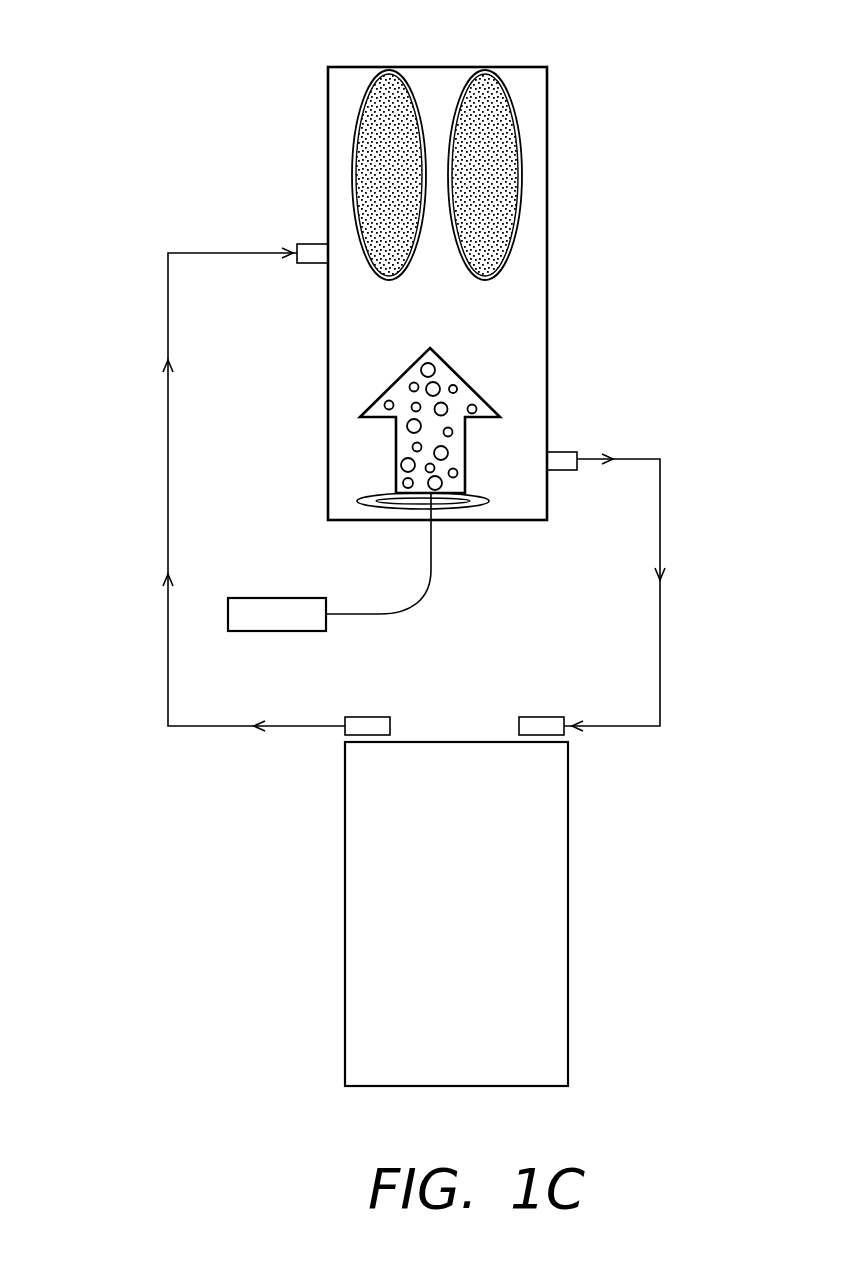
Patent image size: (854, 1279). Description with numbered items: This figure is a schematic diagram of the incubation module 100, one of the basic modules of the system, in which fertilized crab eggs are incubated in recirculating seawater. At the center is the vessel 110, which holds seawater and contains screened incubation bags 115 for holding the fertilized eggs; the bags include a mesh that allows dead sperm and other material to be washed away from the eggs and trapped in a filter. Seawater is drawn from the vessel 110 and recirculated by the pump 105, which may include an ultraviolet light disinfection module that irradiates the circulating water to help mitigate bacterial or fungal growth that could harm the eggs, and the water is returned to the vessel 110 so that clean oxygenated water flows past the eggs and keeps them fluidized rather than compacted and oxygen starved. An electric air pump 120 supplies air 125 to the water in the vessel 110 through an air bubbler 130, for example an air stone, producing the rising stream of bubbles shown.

The incubation module 100 is at (198, 90).
The pump 105 is at (568, 848).
The vessel 110 is at (551, 66).
The incubation bag 115 is at (522, 140).
The electric air pump 120 is at (228, 614).
The air 125 is at (475, 392).
The air bubbler 130 is at (443, 503).